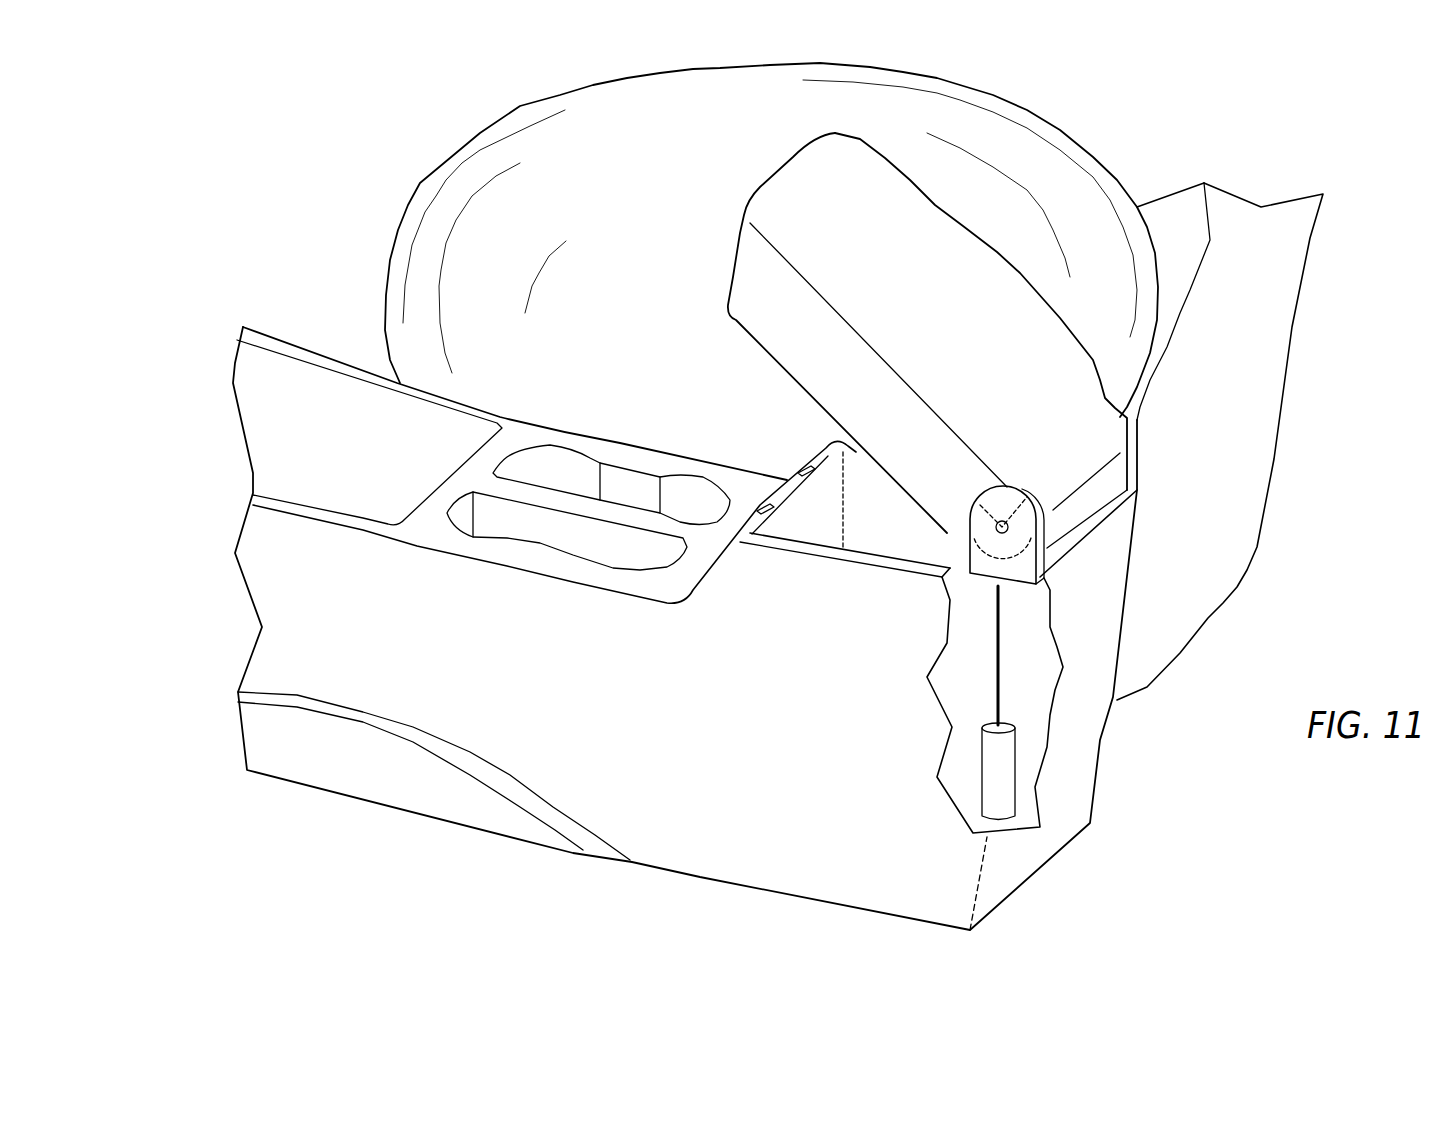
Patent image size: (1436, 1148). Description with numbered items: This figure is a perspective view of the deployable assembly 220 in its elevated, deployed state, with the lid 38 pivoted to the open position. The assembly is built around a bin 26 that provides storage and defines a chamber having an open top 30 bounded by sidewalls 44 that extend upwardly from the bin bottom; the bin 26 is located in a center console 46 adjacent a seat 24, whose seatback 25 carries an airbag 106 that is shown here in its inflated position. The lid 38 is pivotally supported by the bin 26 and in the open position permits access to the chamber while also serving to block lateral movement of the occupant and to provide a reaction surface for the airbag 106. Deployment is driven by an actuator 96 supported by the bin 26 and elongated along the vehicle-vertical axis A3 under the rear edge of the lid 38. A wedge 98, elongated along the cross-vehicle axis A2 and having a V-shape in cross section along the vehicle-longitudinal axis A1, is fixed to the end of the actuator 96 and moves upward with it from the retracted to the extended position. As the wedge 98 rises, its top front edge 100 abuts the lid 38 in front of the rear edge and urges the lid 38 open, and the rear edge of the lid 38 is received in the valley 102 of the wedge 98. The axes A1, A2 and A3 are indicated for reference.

The deployable assembly 220 is at (383, 195).
The airbag 106 is at (533, 147).
The lid 38 is at (878, 207).
The seat 24 is at (1180, 192).
The seatback 25 is at (1292, 269).
The bin 26 is at (803, 592).
The center console 46 is at (520, 438).
The open top 30 is at (805, 518).
The sidewalls 44 is at (827, 488).
The wedge 98 is at (1017, 490).
The top front edge 100 is at (977, 513).
The valley 102 is at (1000, 520).
The actuator 96 is at (1000, 755).
The vehicle-longitudinal axis A1 is at (532, 912).
The cross-vehicle axis A2 is at (1177, 845).
The vehicle-vertical axis A3 is at (157, 439).